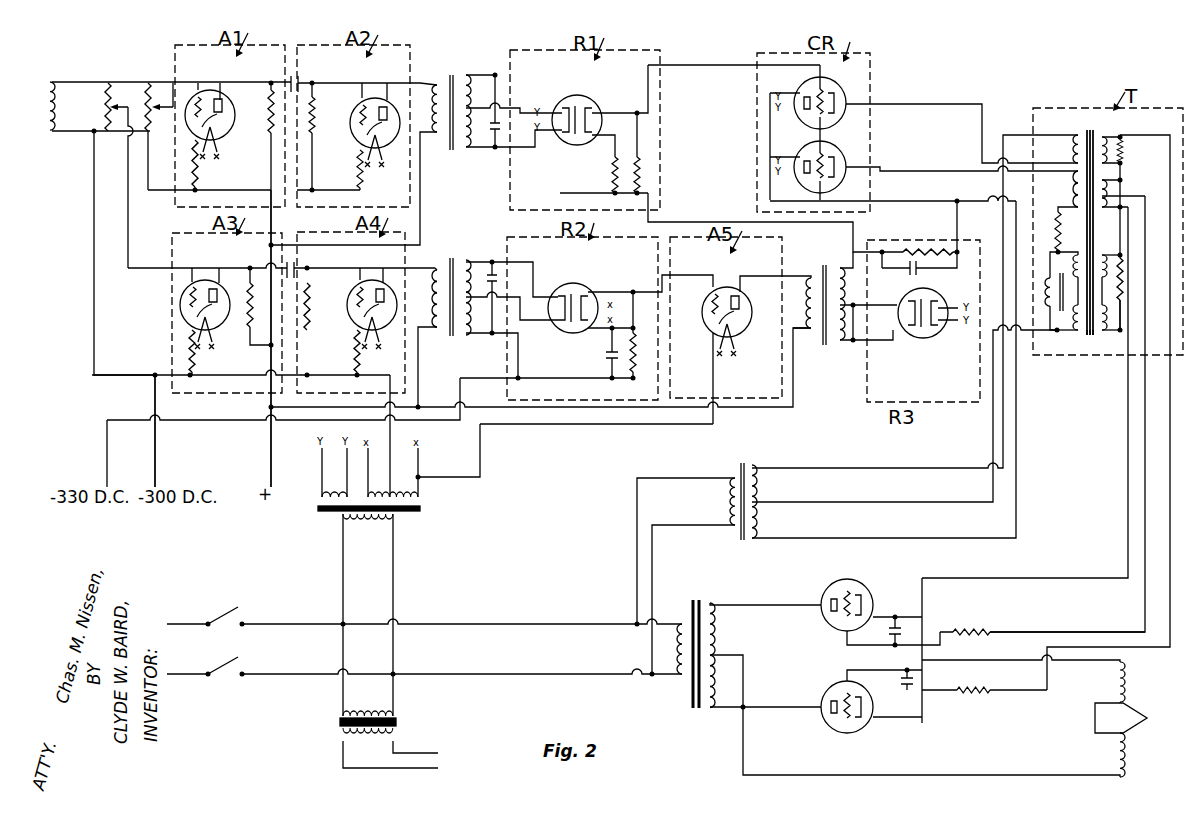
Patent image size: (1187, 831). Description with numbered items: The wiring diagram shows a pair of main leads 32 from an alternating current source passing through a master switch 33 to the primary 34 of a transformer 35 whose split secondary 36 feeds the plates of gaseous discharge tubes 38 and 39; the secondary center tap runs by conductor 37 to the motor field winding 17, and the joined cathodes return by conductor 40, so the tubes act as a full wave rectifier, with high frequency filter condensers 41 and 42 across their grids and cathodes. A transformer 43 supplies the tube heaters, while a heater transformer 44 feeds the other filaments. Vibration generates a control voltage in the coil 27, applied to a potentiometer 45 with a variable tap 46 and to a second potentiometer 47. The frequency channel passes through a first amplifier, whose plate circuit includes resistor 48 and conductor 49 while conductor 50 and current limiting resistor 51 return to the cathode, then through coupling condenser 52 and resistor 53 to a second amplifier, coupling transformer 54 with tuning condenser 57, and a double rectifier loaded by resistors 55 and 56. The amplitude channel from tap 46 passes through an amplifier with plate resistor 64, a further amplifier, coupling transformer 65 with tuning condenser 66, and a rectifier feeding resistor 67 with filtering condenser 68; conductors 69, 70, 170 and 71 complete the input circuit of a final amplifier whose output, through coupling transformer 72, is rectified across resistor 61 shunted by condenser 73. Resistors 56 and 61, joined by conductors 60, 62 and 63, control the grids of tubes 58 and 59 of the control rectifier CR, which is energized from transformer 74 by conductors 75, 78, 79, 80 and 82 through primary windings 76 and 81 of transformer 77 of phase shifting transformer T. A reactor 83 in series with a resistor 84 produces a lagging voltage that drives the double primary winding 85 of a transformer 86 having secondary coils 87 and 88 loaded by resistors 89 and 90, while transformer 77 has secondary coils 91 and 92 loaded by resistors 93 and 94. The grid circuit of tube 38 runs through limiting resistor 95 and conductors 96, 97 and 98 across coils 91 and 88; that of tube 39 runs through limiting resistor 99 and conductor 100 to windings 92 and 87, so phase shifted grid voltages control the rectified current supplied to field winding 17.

The coil 27 is at (36, 128).
The potentiometer 45 is at (105, 104).
The variable tap 46 is at (118, 112).
The second potentiometer 47 is at (160, 100).
The resistor 48 is at (269, 113).
The conductor 49 is at (248, 460).
The conductor 50 is at (92, 227).
The current limiting resistor 51 is at (200, 168).
The coupling condenser 52 is at (295, 74).
The resistor 53 is at (315, 125).
The coupling transformer 54 is at (451, 152).
The resistor 55 is at (612, 172).
The resistor 56 is at (640, 167).
The tuning condenser 57 is at (493, 133).
The vacuum tube 58 is at (840, 120).
The vacuum tube 59 is at (840, 183).
The conductor 60 is at (720, 65).
The resistor 61 is at (922, 250).
The conductor 62 is at (680, 221).
The conductor 63 is at (917, 203).
The resistor 64 is at (248, 327).
The coupling transformer 65 is at (449, 340).
The tuning condenser 66 is at (490, 272).
The resistor 67 is at (633, 340).
The filtering condenser 68 is at (606, 356).
The conductor 69 is at (692, 275).
The conductor 70 is at (443, 422).
The conductor 71 is at (618, 427).
The coupling transformer 72 is at (826, 350).
The filtering and voltage sustaining condenser 73 is at (925, 270).
The transformer 74 is at (747, 460).
The conductor 75 is at (953, 103).
The primary winding 76 is at (1076, 133).
The transformer 77 is at (1091, 126).
The conductor 78 is at (1005, 450).
The conductor 79 is at (991, 433).
The conductor 80 is at (930, 170).
The primary winding 81 is at (1073, 186).
The conductor 82 is at (1018, 402).
The reactor 83 is at (1050, 276).
The resistor 84 is at (1058, 233).
The double primary winding 85 is at (1077, 334).
The transformer 86 is at (1089, 340).
The secondary coil 87 is at (1100, 334).
The secondary coil 88 is at (1122, 266).
The resistor 89 is at (1122, 316).
The resistor 90 is at (1130, 279).
The secondary coil 91 is at (1135, 199).
The secondary coil 92 is at (1118, 136).
The resistor 93 is at (1120, 190).
The resistor 94 is at (1125, 150).
The limiting resistor 95 is at (978, 633).
The conductor 96 is at (1143, 226).
The conductor 97 is at (1120, 243).
The common conductor 98 is at (1126, 508).
The limiting resistor 99 is at (977, 692).
The conductor 100 is at (1168, 463).
The conductor 170 is at (222, 378).
The field winding 17 is at (1142, 718).
The main leads 32 is at (192, 622).
The master switch 33 is at (229, 605).
The primary 34 is at (683, 622).
The transformer 35 is at (701, 598).
The split winding secondary 36 is at (717, 637).
The conductor 37 is at (948, 773).
The electron discharge tube 38 is at (827, 583).
The electron discharge tube 39 is at (852, 734).
The conductor 40 is at (1023, 662).
The high frequency filter condenser 41 is at (897, 618).
The high frequency filter condenser 42 is at (907, 688).
The transformer 43 is at (402, 720).
The filament or heater transformer 44 is at (425, 510).